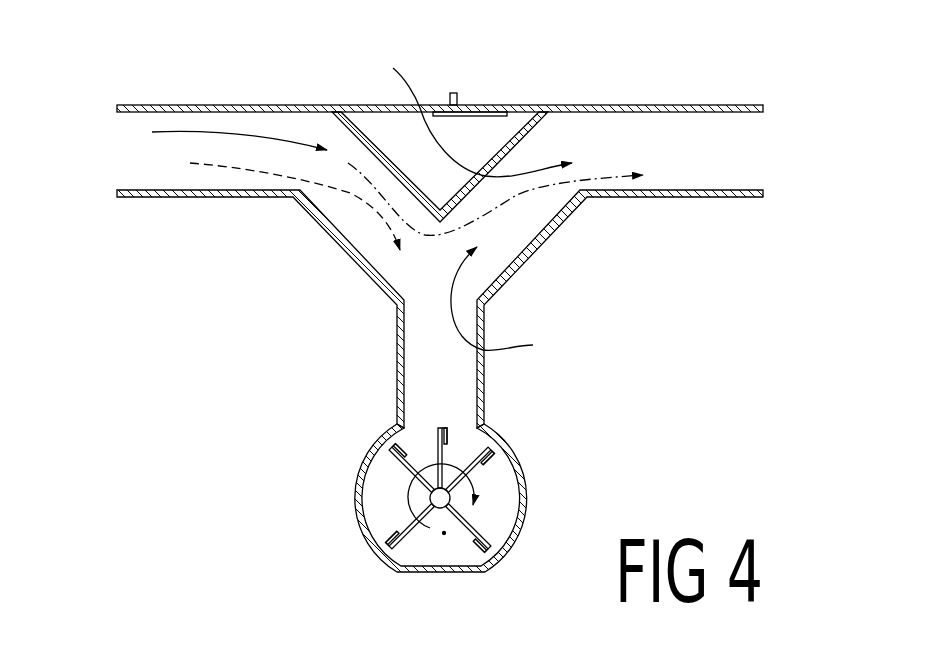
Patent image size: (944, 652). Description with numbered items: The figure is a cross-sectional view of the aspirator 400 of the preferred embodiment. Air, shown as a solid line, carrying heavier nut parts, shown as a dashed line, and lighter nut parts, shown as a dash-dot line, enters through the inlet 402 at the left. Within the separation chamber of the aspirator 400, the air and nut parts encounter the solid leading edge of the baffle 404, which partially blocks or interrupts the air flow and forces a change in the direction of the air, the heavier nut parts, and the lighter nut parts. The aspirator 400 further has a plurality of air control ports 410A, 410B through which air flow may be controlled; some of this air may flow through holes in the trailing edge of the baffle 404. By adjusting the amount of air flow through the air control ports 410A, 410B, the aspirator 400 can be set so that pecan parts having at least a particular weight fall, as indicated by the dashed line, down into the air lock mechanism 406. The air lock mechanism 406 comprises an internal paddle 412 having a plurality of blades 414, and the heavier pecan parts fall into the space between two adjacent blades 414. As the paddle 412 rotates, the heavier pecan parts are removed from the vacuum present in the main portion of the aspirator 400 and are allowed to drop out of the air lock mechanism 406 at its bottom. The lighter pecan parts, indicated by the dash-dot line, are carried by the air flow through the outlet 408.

The aspirator 400 is at (549, 59).
The inlet 402 is at (106, 93).
The baffle 404 is at (373, 143).
The air lock mechanism 406 is at (338, 482).
The outlet 408 is at (777, 100).
The air control port 410A is at (428, 98).
The air control port 410B is at (483, 344).
The internal paddle 412 is at (445, 536).
The blades 414 is at (470, 463).